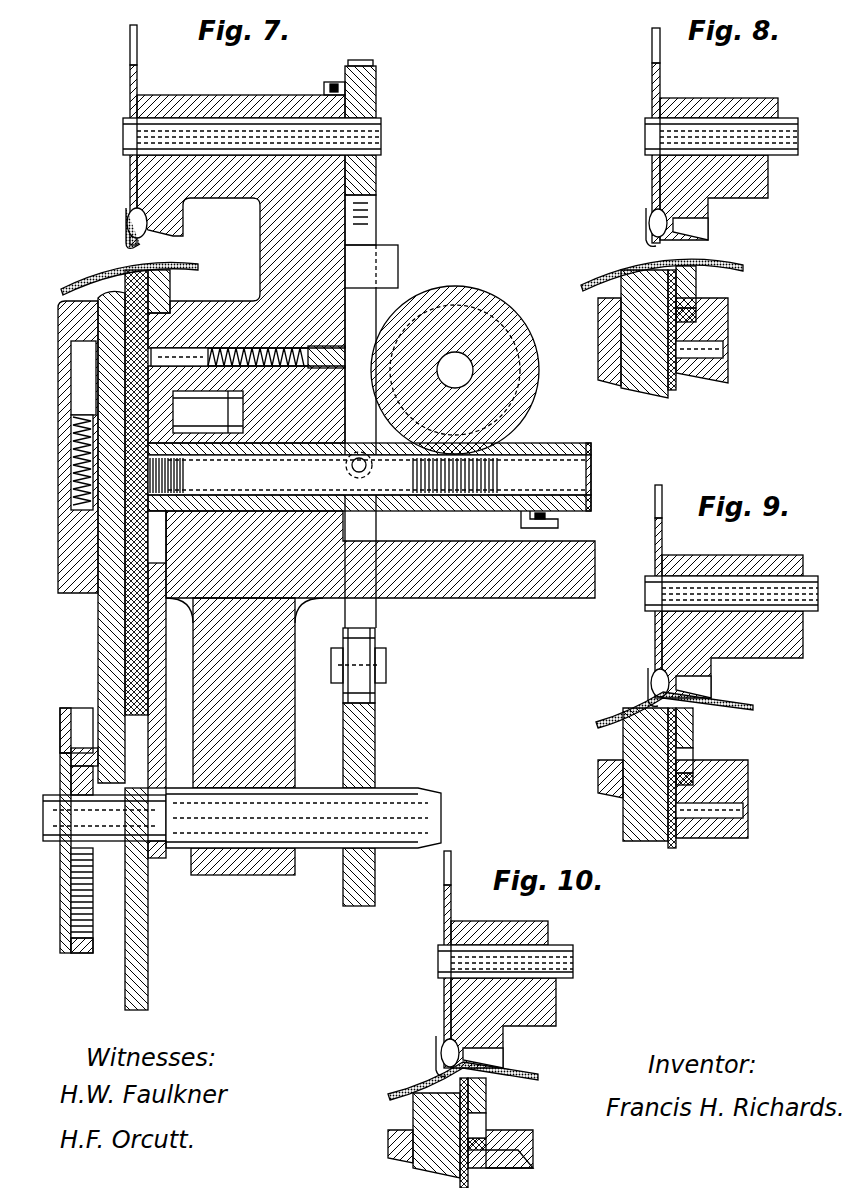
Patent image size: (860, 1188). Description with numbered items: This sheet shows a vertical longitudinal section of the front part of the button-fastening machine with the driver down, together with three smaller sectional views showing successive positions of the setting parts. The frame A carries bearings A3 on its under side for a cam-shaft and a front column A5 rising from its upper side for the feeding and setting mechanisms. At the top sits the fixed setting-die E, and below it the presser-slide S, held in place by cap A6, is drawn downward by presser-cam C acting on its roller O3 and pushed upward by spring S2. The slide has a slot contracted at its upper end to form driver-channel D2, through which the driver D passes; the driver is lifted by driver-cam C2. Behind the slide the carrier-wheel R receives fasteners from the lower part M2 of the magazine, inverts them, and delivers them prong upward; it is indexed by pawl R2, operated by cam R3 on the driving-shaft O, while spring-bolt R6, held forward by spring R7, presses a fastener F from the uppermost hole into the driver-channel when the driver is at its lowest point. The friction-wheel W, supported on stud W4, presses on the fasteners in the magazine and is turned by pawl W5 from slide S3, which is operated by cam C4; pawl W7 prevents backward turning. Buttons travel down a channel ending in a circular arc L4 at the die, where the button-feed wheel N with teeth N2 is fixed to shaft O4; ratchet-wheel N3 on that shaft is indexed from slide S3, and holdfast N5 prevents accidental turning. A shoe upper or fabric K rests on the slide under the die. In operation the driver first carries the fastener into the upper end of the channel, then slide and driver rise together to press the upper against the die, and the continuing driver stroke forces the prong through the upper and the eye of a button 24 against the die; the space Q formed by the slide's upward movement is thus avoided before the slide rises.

In FIG. 7, the teeth N2 is at (122, 34).
In FIG. 8, the teeth N2 is at (644, 36).
In FIG. 9, the teeth N2 is at (654, 500).
In FIG. 10, the teeth N2 is at (443, 866).
In FIG. 7, the button-feed wheel N is at (122, 95).
In FIG. 8, the button-feed wheel N is at (644, 72).
In FIG. 9, the button-feed wheel N is at (647, 612).
In FIG. 10, the button-feed wheel N is at (436, 908).
In FIG. 7, the ratchet-wheel N3 is at (368, 92).
In FIG. 7, the holdfast N5 is at (345, 56).
In FIG. 7, the shaft O4 is at (118, 134).
In FIG. 8, the shaft O4 is at (640, 128).
In FIG. 9, the shaft O4 is at (805, 582).
In FIG. 10, the shaft O4 is at (565, 952).
In FIG. 7, the circular arc L4 is at (118, 205).
In FIG. 8, the circular arc L4 is at (640, 210).
In FIG. 9, the circular arc L4 is at (660, 683).
In FIG. 10, the circular arc L4 is at (432, 1036).
In FIG. 7, the button 24 is at (117, 230).
In FIG. 8, the button 24 is at (638, 228).
In FIG. 9, the button 24 is at (640, 690).
In FIG. 10, the button 24 is at (428, 1056).
In FIG. 7, the shoe upper or fabric K is at (72, 276).
In FIG. 8, the shoe upper or fabric K is at (590, 274).
In FIG. 9, the shoe upper or fabric K is at (596, 714).
In FIG. 10, the shoe upper or fabric K is at (392, 1082).
In FIG. 7, the driver-channel D2 is at (162, 278).
In FIG. 7, the spring-bolt R6 is at (205, 340).
In FIG. 7, the spring R7 is at (250, 360).
In FIG. 8, the spring R7 is at (715, 342).
In FIG. 9, the spring R7 is at (735, 802).
In FIG. 7, the carrier-wheel R is at (208, 412).
In FIG. 8, the carrier-wheel R is at (670, 382).
In FIG. 9, the carrier-wheel R is at (670, 840).
In FIG. 10, the carrier-wheel R is at (490, 1145).
In FIG. 8, the fastener F is at (688, 274).
In FIG. 9, the fastener F is at (685, 716).
In FIG. 10, the fastener F is at (478, 1080).
In FIG. 7, the spring S2 is at (63, 470).
In FIG. 7, the presser-slide S is at (90, 624).
In FIG. 8, the presser-slide S is at (640, 385).
In FIG. 9, the presser-slide S is at (640, 833).
In FIG. 10, the presser-slide S is at (405, 1106).
In FIG. 7, the driver D is at (126, 520).
In FIG. 8, the driver D is at (662, 382).
In FIG. 9, the driver D is at (664, 840).
In FIG. 10, the driver D is at (460, 1170).
In FIG. 7, the slide S3 is at (371, 411).
In FIG. 7, the friction-wheel W is at (448, 278).
In FIG. 7, the stud W4 is at (455, 370).
In FIG. 7, the pawl W5 is at (356, 450).
In FIG. 7, the pawl W7 is at (505, 422).
In FIG. 7, the lower part of the magazine M2 is at (490, 522).
In FIG. 7, the frame A is at (380, 649).
In FIG. 7, the bearings A3 is at (240, 867).
In FIG. 8, the front column A5 is at (720, 90).
In FIG. 9, the front column A5 is at (732, 626).
In FIG. 10, the front column A5 is at (525, 1128).
In FIG. 7, the cap A6 is at (55, 585).
In FIG. 8, the cap A6 is at (598, 378).
In FIG. 9, the cap A6 is at (595, 790).
In FIG. 10, the cap A6 is at (380, 1143).
In FIG. 7, the roller O3 is at (72, 712).
In FIG. 7, the cam or eccentric R3 is at (120, 752).
In FIG. 7, the driving-shaft O is at (242, 818).
In FIG. 7, the cam C4 is at (367, 725).
In FIG. 7, the pawl R2 is at (158, 850).
In FIG. 7, the driver-cam C2 is at (140, 952).
In FIG. 7, the presser-cam C is at (65, 945).
In FIG. 8, the setting-die E is at (700, 216).
In FIG. 9, the setting-die E is at (695, 674).
In FIG. 10, the setting-die E is at (480, 1043).
In FIG. 9, the space Q is at (685, 752).
In FIG. 10, the space Q is at (478, 1115).